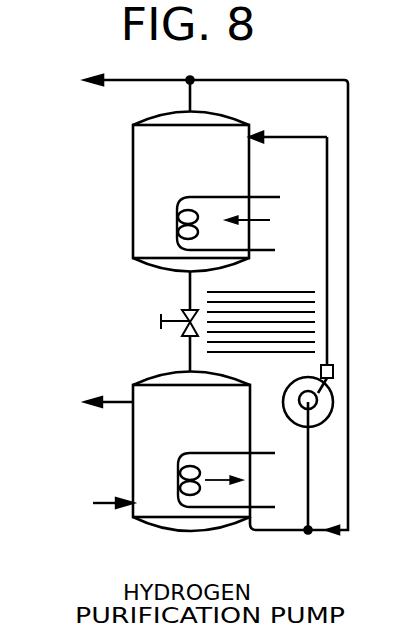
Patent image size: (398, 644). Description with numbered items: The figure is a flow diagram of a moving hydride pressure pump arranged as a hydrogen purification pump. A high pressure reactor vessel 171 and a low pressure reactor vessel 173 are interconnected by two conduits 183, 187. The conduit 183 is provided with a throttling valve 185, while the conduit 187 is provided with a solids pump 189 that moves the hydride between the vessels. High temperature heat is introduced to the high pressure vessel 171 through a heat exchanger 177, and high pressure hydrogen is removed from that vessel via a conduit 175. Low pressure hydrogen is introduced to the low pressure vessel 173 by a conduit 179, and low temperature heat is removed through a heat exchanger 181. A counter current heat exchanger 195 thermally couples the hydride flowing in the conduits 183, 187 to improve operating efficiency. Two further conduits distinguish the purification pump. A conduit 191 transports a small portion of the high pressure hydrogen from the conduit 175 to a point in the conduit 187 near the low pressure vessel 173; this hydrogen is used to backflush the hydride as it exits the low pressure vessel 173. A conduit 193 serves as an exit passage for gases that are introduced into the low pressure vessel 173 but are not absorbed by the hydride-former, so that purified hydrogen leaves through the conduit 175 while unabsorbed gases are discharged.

The high pressure reactor vessel 171 is at (140, 172).
The low pressure reactor vessel 173 is at (183, 538).
The conduit 175 is at (130, 78).
The heat exchanger 177 is at (262, 197).
The conduit 179 is at (113, 506).
The heat exchanger 181 is at (263, 455).
The conduit 183 is at (183, 357).
The throttling valve 185 is at (183, 312).
The conduit 187 is at (310, 441).
The solids pump 189 is at (333, 370).
The conduit 191 is at (347, 114).
The conduit 193 is at (113, 400).
The counter current heat exchanger 195 is at (237, 350).